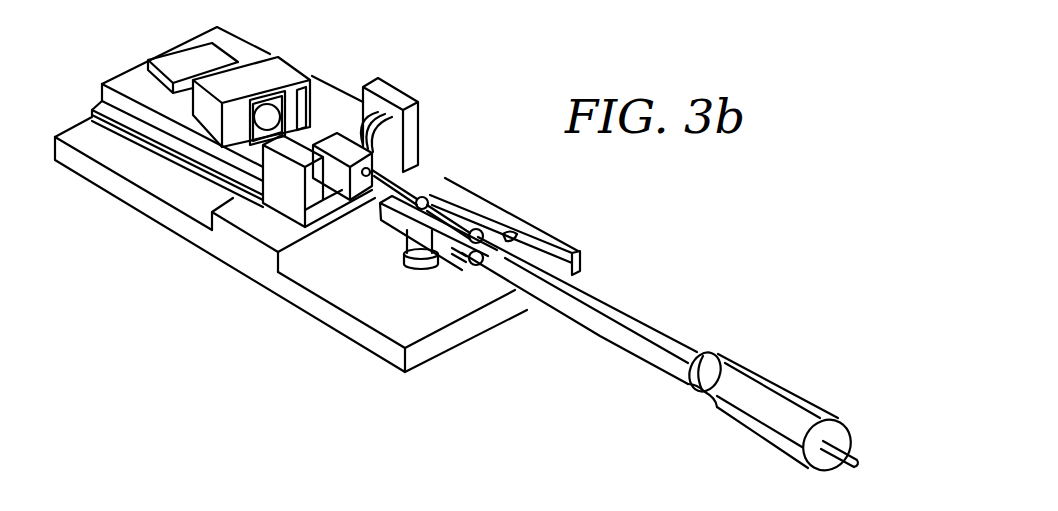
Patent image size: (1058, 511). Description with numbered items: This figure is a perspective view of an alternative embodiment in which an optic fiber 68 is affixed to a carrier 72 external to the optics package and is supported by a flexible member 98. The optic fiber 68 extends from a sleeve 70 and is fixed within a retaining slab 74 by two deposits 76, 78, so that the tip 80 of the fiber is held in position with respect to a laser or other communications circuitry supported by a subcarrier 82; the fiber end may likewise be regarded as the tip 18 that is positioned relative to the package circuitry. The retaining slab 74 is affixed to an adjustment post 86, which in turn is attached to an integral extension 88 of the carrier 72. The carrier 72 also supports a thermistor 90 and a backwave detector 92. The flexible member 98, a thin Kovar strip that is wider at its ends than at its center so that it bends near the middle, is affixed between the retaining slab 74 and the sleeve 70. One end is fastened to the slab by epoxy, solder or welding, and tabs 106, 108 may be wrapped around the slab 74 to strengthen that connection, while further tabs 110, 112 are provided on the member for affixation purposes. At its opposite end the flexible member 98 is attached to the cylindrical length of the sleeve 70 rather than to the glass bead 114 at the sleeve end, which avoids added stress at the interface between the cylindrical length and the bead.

The thermistor 90 is at (167, 60).
The backwave detector 92 is at (290, 73).
The tip 18 is at (320, 132).
The tip 80 is at (386, 151).
The deposit 76 is at (458, 180).
The optic fiber 68 is at (477, 212).
The tab 106 is at (517, 232).
The carrier 72 is at (112, 185).
The subcarrier 82 is at (302, 181).
The retaining slab 74 is at (393, 226).
The adjustment post 86 is at (406, 262).
The deposit 78 is at (455, 262).
The tab 108 is at (470, 268).
The integral extension 88 is at (385, 328).
The flexible member 98 is at (675, 338).
The glass bead 114 is at (713, 352).
The tab 110 is at (742, 363).
The sleeve 70 is at (817, 407).
The tab 112 is at (712, 400).